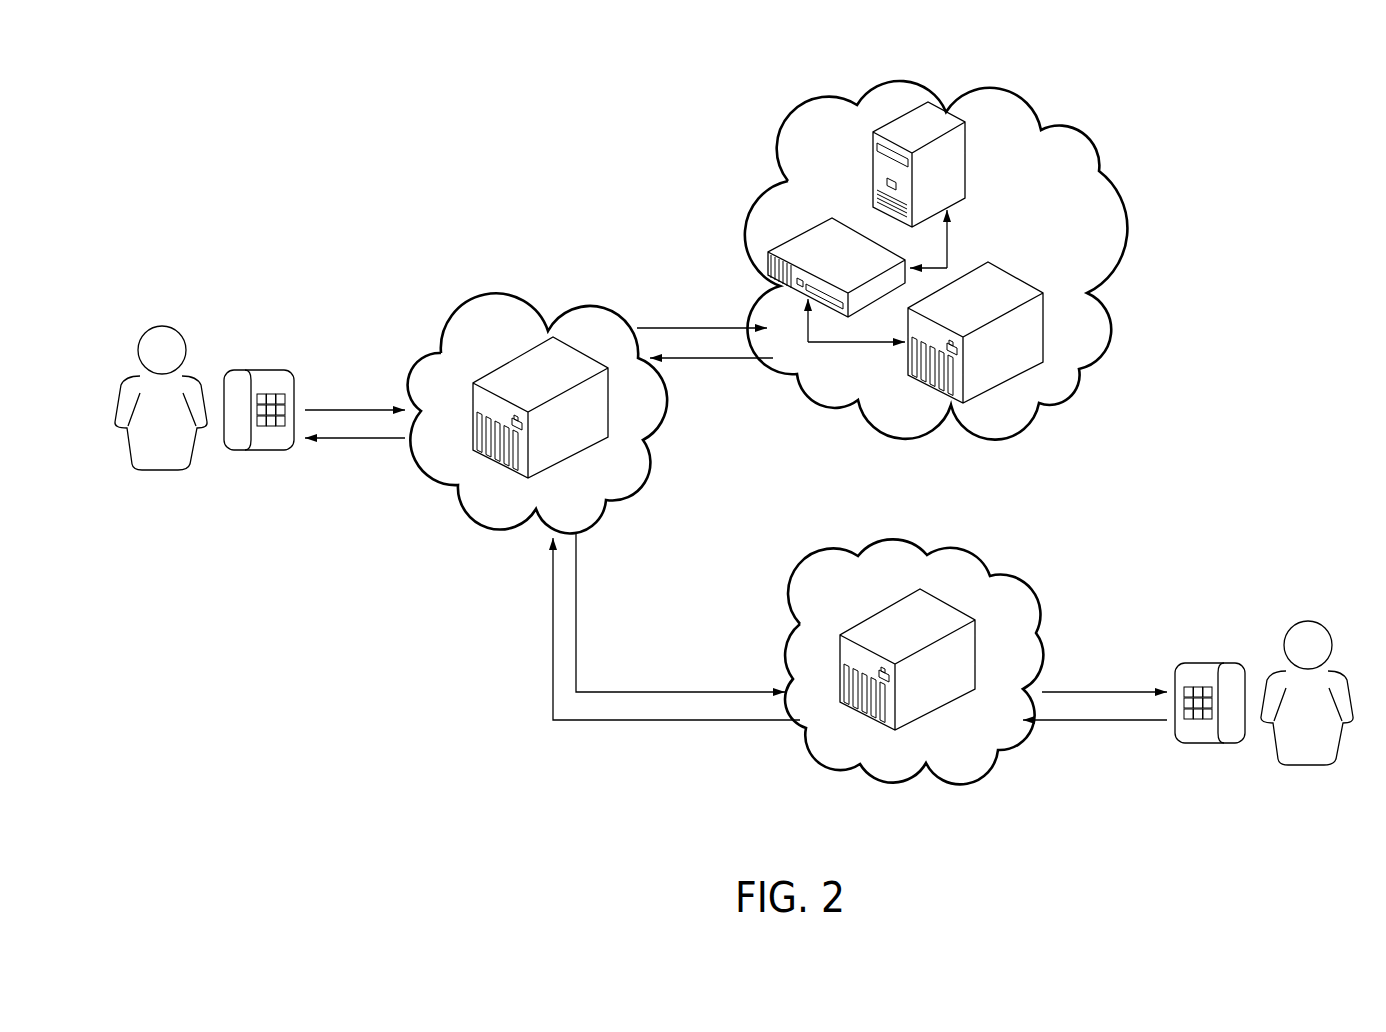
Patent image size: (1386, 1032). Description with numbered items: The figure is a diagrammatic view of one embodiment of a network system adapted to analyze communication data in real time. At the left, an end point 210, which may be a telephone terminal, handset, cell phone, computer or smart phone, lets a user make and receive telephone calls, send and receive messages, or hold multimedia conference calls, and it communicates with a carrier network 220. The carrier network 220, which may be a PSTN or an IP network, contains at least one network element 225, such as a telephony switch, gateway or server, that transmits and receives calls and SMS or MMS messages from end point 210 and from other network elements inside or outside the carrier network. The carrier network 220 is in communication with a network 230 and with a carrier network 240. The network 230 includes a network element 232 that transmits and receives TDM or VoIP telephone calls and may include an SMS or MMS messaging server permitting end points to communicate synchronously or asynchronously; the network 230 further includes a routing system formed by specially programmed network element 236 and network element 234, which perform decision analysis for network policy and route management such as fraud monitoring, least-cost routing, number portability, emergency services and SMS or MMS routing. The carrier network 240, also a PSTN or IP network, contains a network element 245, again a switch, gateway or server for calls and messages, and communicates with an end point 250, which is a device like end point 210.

The end point 210 is at (219, 462).
The carrier network 220 is at (569, 297).
The network element 225 is at (504, 362).
The network 230 is at (1091, 152).
The network element 232 is at (1012, 371).
The network element 234 is at (906, 125).
The network element 236 is at (808, 240).
The carrier network 240 is at (1010, 573).
The network element 245 is at (930, 710).
The end point 250 is at (1250, 622).